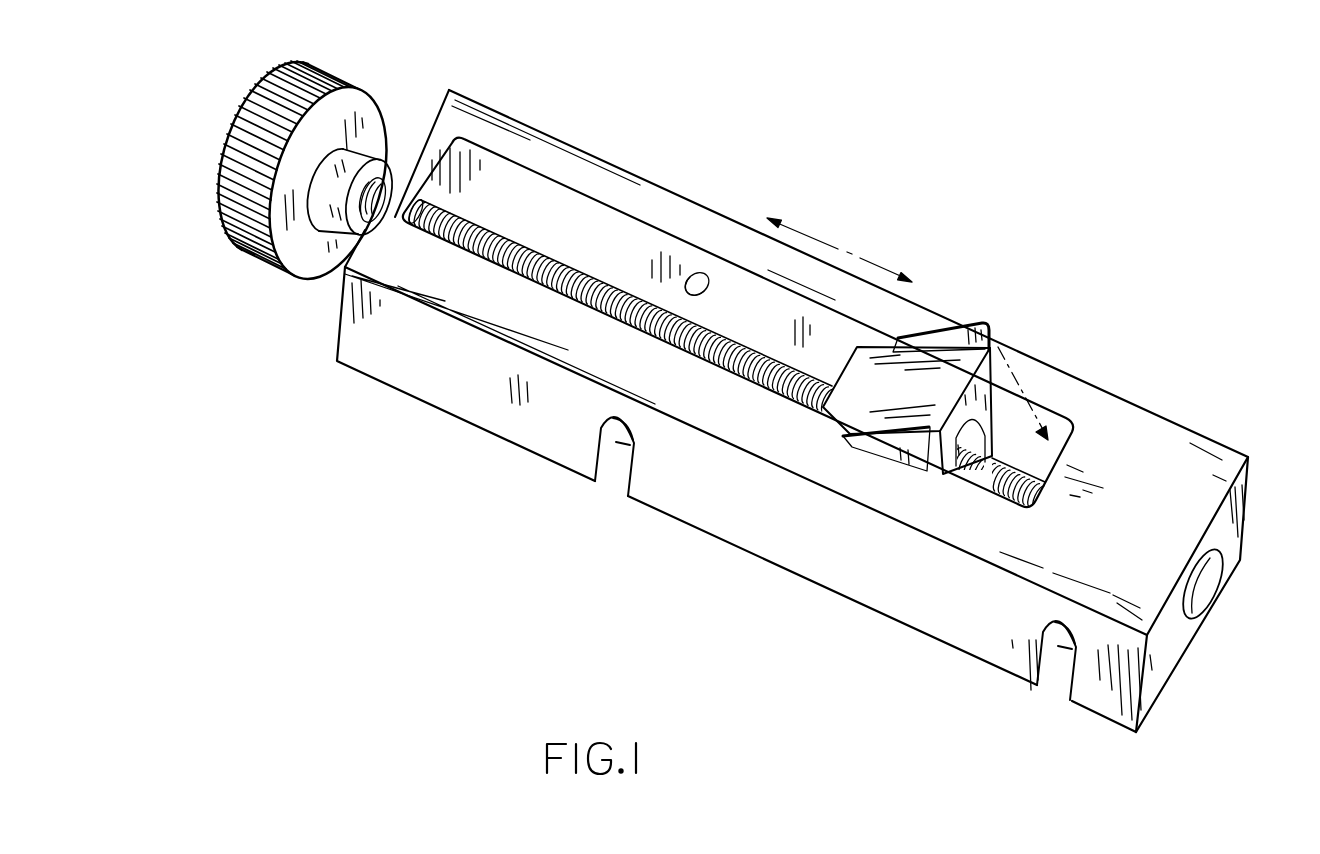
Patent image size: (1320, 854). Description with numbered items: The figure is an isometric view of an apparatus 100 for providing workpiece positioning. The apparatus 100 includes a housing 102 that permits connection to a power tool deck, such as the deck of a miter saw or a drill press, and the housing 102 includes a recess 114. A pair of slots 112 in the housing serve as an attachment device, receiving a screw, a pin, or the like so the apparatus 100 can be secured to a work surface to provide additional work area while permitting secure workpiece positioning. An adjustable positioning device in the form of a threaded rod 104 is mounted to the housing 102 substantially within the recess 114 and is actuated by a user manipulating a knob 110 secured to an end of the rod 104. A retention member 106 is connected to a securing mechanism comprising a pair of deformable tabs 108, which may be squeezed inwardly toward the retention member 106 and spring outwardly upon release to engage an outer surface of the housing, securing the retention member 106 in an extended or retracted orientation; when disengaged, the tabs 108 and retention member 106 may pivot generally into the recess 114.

The apparatus 100 is at (820, 153).
The housing 102 is at (521, 119).
The threaded rod 104 is at (588, 273).
The retention member 106 is at (985, 398).
The deformable tabs 108 is at (940, 327).
The knob 110 is at (238, 210).
The slots 112 is at (612, 470).
The recess 114 is at (568, 210).